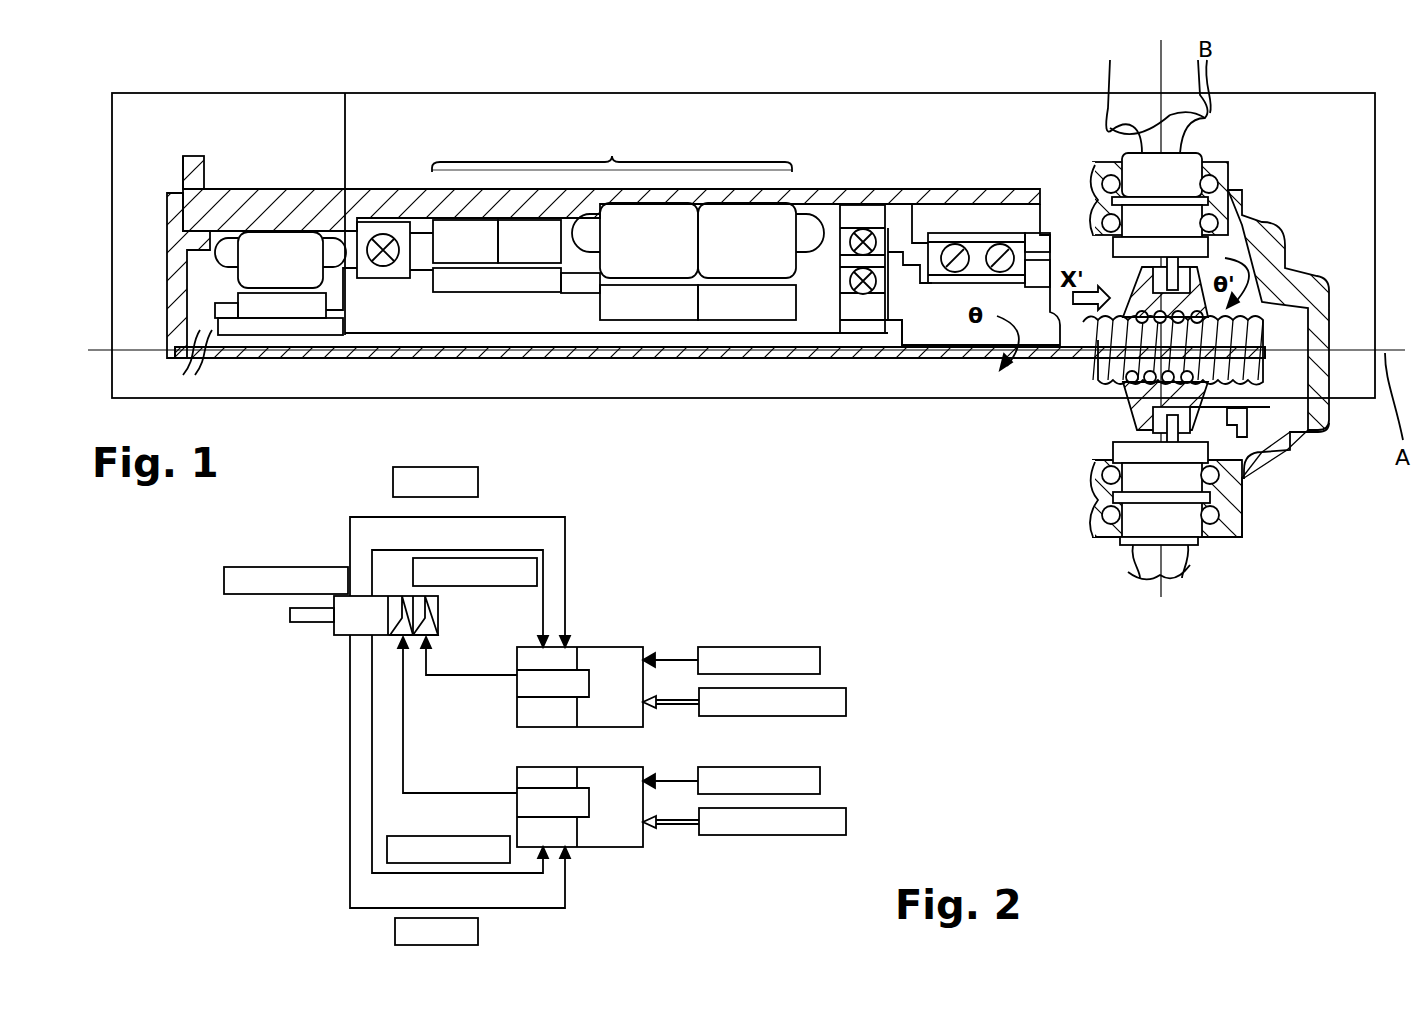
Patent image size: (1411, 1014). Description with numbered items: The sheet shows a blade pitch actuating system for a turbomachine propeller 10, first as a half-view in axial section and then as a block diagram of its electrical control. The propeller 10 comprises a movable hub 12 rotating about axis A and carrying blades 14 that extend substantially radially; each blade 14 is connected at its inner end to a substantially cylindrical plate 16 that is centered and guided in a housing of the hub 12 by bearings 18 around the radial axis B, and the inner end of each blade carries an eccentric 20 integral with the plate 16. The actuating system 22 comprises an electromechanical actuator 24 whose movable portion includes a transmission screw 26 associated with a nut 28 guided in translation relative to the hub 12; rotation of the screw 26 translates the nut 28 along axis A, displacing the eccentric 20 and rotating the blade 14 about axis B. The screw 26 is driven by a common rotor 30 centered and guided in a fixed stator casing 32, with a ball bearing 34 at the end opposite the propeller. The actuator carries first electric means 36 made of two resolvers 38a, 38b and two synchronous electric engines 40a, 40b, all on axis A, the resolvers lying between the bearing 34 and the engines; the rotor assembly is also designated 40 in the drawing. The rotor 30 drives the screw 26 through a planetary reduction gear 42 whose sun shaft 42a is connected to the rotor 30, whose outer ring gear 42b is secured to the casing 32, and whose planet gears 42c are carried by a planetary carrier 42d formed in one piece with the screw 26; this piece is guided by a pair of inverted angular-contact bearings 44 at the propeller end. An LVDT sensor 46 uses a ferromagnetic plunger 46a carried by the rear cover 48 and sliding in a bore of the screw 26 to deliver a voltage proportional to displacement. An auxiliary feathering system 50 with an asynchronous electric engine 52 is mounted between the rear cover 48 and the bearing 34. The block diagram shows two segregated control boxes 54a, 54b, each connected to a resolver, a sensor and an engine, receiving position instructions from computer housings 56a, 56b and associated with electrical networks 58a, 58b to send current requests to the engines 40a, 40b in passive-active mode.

In FIG. 1, the propeller 10 is at (1253, 82).
In FIG. 1, the hub 12 is at (1287, 233).
In FIG. 1, the blade 14 is at (1140, 133).
In FIG. 1, the plate 16 is at (1193, 162).
In FIG. 1, the bearings 18 is at (1218, 223).
In FIG. 1, the eccentric 20 is at (1197, 432).
In FIG. 1, the actuating system 22 is at (802, 93).
In FIG. 1, the electromechanical actuator 24 is at (483, 160).
In FIG. 2, the electromechanical actuator 24 is at (248, 590).
In FIG. 1, the transmission screw 26 is at (1062, 374).
In FIG. 1, the nut 28 is at (1158, 303).
In FIG. 1, the rotor 30 is at (463, 308).
In FIG. 1, the casing 32 is at (823, 203).
In FIG. 1, the bearing 34 is at (365, 233).
In FIG. 1, the first electric means 36 is at (612, 144).
In FIG. 1, the resolver 38a is at (457, 260).
In FIG. 2, the resolver 38a is at (503, 570).
In FIG. 1, the resolver 38b is at (540, 250).
In FIG. 2, the resolver 38b is at (398, 848).
In FIG. 1, the rotor 40 is at (592, 366).
In FIG. 1, the electric engine 40a is at (642, 260).
In FIG. 2, the electric engine 40a is at (393, 640).
In FIG. 1, the electric engine 40b is at (730, 255).
In FIG. 2, the electric engine 40b is at (440, 623).
In FIG. 1, the reduction gear 42 is at (893, 240).
In FIG. 1, the sun shaft 42a is at (867, 302).
In FIG. 1, the outer ring gear 42b is at (858, 222).
In FIG. 1, the planet gears 42c is at (832, 278).
In FIG. 1, the planetary carrier 42d is at (897, 270).
In FIG. 1, the bearings 44 is at (998, 245).
In FIG. 1, the sensor 46 is at (633, 352).
In FIG. 2, the sensor 46 is at (400, 478).
In FIG. 1, the plunger 46a is at (720, 352).
In FIG. 1, the rear cover 48 is at (172, 317).
In FIG. 1, the auxiliary feathering system 50 is at (218, 93).
In FIG. 1, the electric engine 52 is at (288, 245).
In FIG. 2, the electronic control box 54a is at (580, 682).
In FIG. 2, the electronic control box 54b is at (573, 807).
In FIG. 2, the computer housing 56a is at (757, 658).
In FIG. 2, the computer housing 56b is at (798, 782).
In FIG. 2, the electrical network 58a is at (823, 697).
In FIG. 2, the electrical network 58b is at (780, 820).